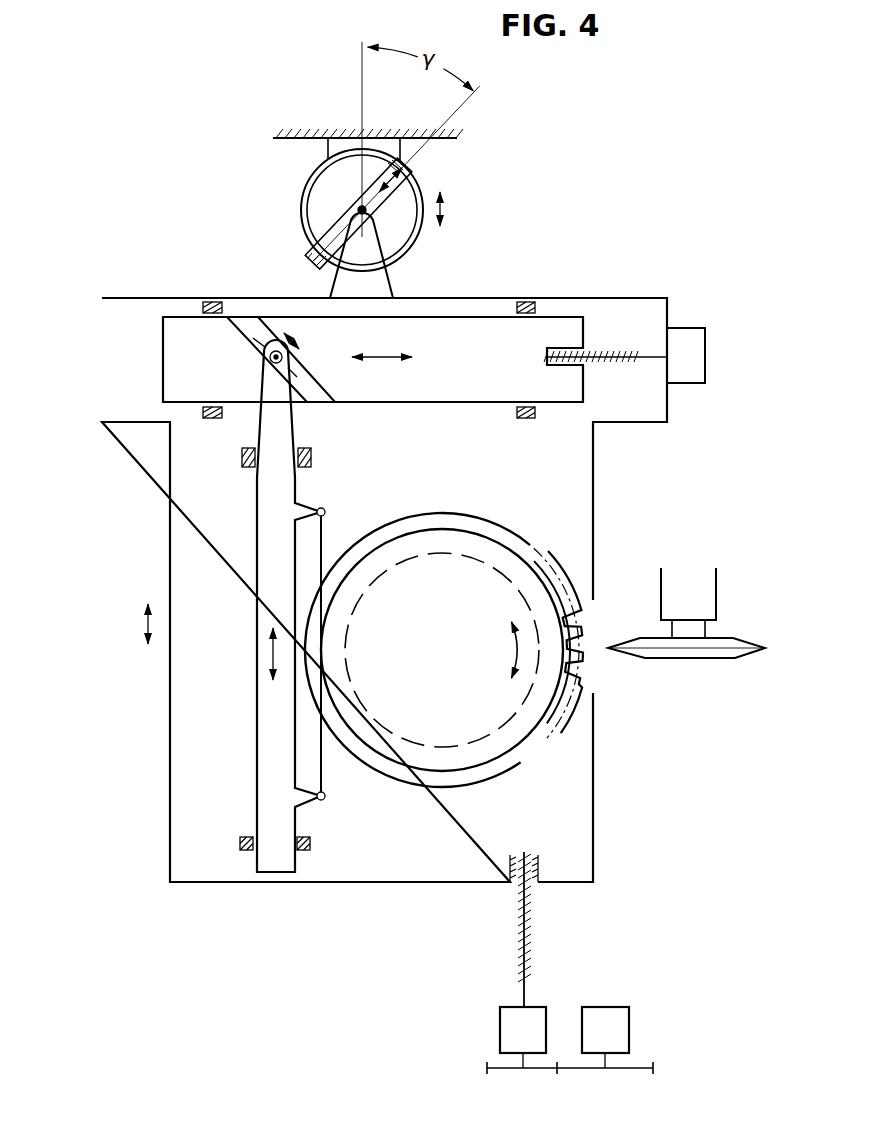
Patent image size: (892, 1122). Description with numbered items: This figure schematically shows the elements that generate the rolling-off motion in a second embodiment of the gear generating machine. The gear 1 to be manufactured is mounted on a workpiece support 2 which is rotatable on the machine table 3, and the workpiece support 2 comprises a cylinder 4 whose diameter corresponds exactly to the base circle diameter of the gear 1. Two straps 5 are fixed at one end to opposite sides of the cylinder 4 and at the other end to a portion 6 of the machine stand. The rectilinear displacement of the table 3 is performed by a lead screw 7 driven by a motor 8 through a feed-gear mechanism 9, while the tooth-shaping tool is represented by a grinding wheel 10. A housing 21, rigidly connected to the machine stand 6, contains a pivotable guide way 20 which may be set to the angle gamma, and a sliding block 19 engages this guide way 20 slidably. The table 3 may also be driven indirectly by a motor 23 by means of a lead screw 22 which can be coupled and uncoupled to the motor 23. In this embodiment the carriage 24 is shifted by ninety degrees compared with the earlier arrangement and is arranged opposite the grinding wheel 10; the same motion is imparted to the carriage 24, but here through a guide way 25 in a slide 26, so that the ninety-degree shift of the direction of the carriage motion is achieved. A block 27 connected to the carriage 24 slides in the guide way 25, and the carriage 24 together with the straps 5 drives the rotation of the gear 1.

The gear 1 is at (583, 628).
The workpiece support 2 is at (517, 753).
The machine table 3 is at (207, 865).
The cylinder 4 is at (415, 750).
The straps 5 is at (321, 552).
The portion of the machine stand 6 is at (283, 130).
The lead screw 7 is at (530, 927).
The motor 8 is at (618, 1033).
The feed-gear mechanism 9 is at (510, 1030).
The grinding wheel 10 is at (727, 645).
The sliding block 19 is at (358, 208).
The guide way 20 is at (322, 245).
The housing 21 is at (340, 150).
The lead screw 22 is at (607, 350).
The motor 23 is at (686, 340).
The carriage 24 is at (270, 790).
The guide way 25 is at (245, 325).
The slide 26 is at (478, 335).
The block 27 is at (272, 348).